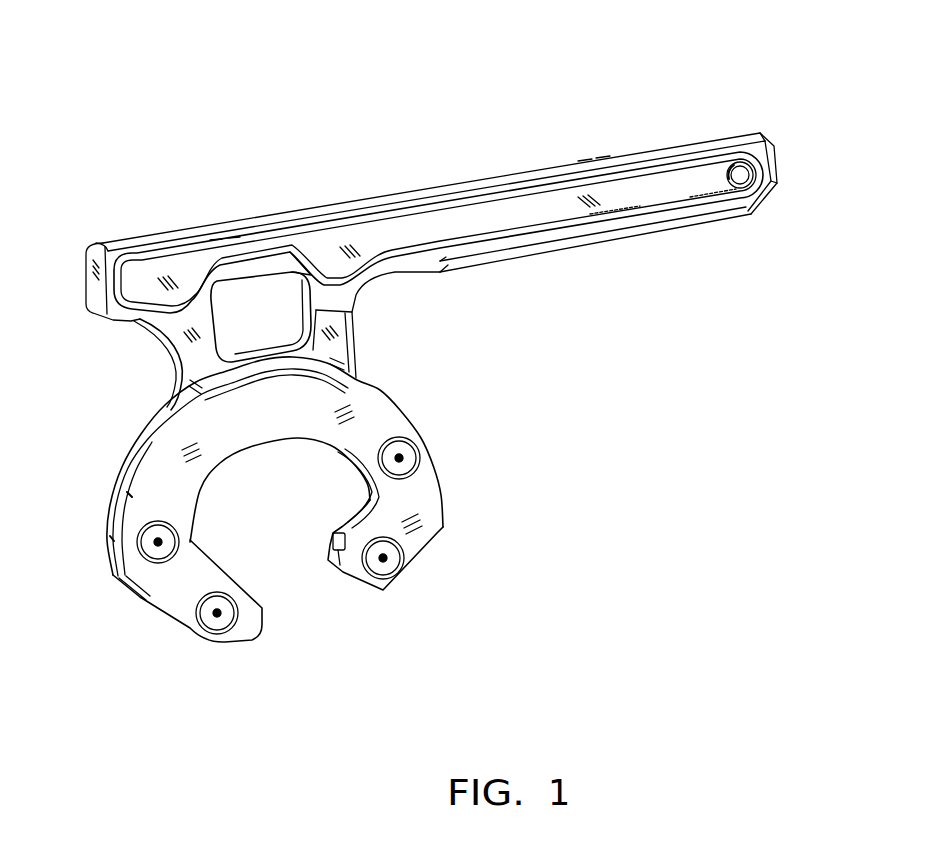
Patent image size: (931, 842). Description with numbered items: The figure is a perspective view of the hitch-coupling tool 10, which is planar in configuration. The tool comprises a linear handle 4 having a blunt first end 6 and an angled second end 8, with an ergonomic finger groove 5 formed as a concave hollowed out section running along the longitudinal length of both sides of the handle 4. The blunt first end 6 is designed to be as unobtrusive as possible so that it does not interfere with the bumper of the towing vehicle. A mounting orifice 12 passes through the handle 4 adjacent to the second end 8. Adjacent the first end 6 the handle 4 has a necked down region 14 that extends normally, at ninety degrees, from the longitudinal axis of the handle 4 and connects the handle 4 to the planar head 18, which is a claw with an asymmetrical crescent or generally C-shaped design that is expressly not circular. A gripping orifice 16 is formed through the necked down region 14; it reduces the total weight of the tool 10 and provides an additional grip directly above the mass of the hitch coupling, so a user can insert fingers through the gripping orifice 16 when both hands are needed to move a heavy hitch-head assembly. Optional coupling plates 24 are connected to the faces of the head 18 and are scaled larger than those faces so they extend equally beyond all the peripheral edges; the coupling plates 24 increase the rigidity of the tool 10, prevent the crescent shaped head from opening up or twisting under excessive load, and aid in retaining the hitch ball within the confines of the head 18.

The hitch-coupling tool 10 is at (397, 120).
The handle 4 is at (498, 173).
The finger groove 5 is at (403, 272).
The first end 6 is at (83, 242).
The second end 8 is at (777, 124).
The mounting orifice 12 is at (742, 163).
The necked down region 14 is at (127, 325).
The gripping orifice 16 is at (250, 300).
The head 18 is at (378, 383).
The coupling plates 24 is at (132, 458).